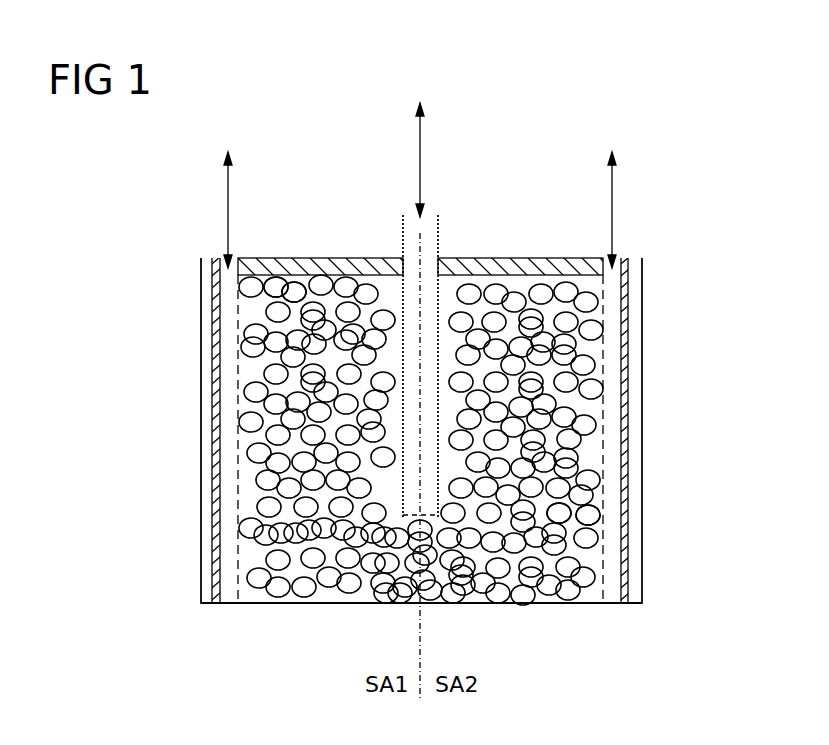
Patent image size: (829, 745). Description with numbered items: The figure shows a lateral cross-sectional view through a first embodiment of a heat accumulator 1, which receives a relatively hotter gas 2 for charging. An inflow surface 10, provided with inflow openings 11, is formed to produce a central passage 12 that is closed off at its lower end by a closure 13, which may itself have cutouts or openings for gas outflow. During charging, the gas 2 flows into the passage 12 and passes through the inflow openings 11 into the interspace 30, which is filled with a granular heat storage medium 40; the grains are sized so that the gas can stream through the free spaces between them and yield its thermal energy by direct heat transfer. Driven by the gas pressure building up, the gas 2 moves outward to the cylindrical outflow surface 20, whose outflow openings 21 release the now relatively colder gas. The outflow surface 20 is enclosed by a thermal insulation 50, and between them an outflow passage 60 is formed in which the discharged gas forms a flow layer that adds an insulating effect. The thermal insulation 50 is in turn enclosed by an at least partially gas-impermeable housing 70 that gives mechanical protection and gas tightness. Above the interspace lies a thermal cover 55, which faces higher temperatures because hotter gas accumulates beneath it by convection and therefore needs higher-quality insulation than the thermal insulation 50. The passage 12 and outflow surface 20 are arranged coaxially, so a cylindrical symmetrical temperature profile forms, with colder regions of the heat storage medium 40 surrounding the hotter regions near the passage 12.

The heat accumulator 1 is at (702, 108).
The gas 2 is at (228, 185).
The inflow surface 10 is at (450, 290).
The inflow openings 11 is at (440, 302).
The passage 12 is at (413, 282).
The closure 13 is at (425, 510).
The outflow surface 20 is at (240, 410).
The outflow openings 21 is at (240, 472).
The interspace 30 is at (335, 288).
The heat storage medium 40 is at (291, 290).
The thermal insulation 50 is at (216, 283).
The thermal cover 55 is at (553, 267).
The outflow passage 60 is at (236, 345).
The housing 70 is at (205, 553).